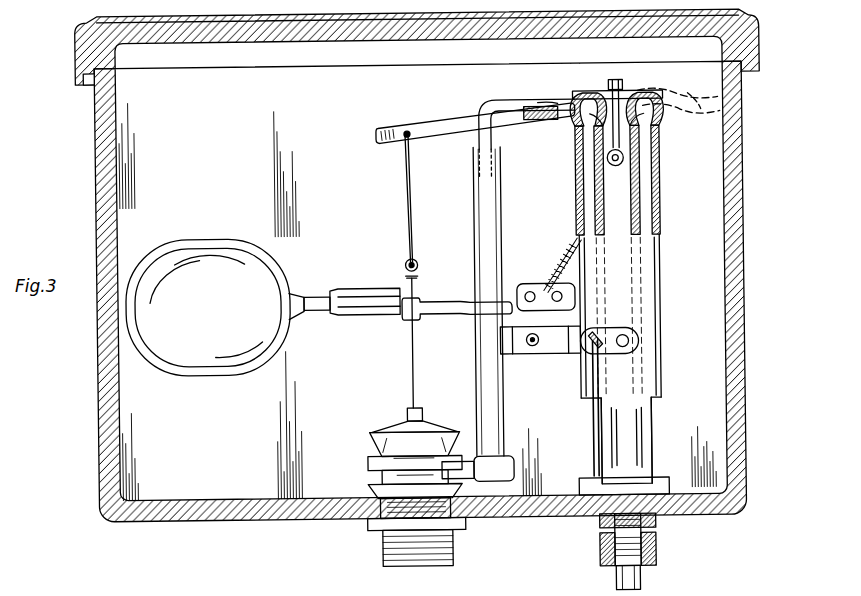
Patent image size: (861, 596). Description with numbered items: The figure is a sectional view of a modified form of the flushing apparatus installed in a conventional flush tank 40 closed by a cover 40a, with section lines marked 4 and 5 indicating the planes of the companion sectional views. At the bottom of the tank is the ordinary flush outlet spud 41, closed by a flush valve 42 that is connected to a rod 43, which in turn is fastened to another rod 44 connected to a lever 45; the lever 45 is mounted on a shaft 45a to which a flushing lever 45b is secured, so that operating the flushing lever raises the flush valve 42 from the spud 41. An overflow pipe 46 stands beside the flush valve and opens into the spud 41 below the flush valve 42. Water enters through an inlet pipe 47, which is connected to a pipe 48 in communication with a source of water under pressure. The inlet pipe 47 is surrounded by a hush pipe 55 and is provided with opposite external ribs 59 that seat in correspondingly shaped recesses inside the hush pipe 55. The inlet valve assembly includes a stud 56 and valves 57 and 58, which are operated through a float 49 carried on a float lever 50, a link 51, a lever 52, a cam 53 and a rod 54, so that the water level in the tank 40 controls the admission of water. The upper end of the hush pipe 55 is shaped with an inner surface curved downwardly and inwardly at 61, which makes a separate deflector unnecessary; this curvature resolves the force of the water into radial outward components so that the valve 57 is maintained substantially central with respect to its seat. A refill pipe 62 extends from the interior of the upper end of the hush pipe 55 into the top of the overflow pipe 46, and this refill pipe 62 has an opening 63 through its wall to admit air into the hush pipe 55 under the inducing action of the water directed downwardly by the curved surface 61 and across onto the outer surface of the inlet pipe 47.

The inlet pipe 4 is at (130, 92).
The section line 5- 5 is at (566, 380).
The flush tank 40 is at (122, 408).
The cover 40a is at (218, 33).
The flush outlet spud 41 is at (385, 522).
The flush valve 42 is at (370, 433).
The rod 43 is at (411, 376).
The rod 44 is at (407, 200).
The lever 45 is at (432, 127).
The shaft 45a is at (678, 87).
The flushing lever 45b is at (714, 326).
The overflow pipe 46 is at (500, 214).
The inlet pipe 47 is at (648, 460).
The pipe 48 is at (640, 580).
The float 49 is at (208, 308).
The float lever 50 is at (372, 300).
The link 51 is at (500, 318).
The lever 52 is at (560, 345).
The cam 53 is at (606, 335).
The rod 54 is at (592, 450).
The hush pipe 55 is at (662, 204).
The stud 56 is at (617, 84).
The valve 57 is at (648, 120).
The valve 58 is at (626, 160).
The external ribs 59 is at (630, 440).
The curved inner surface 61 is at (584, 124).
The refill pipe 62 is at (497, 100).
The opening 63 is at (550, 104).